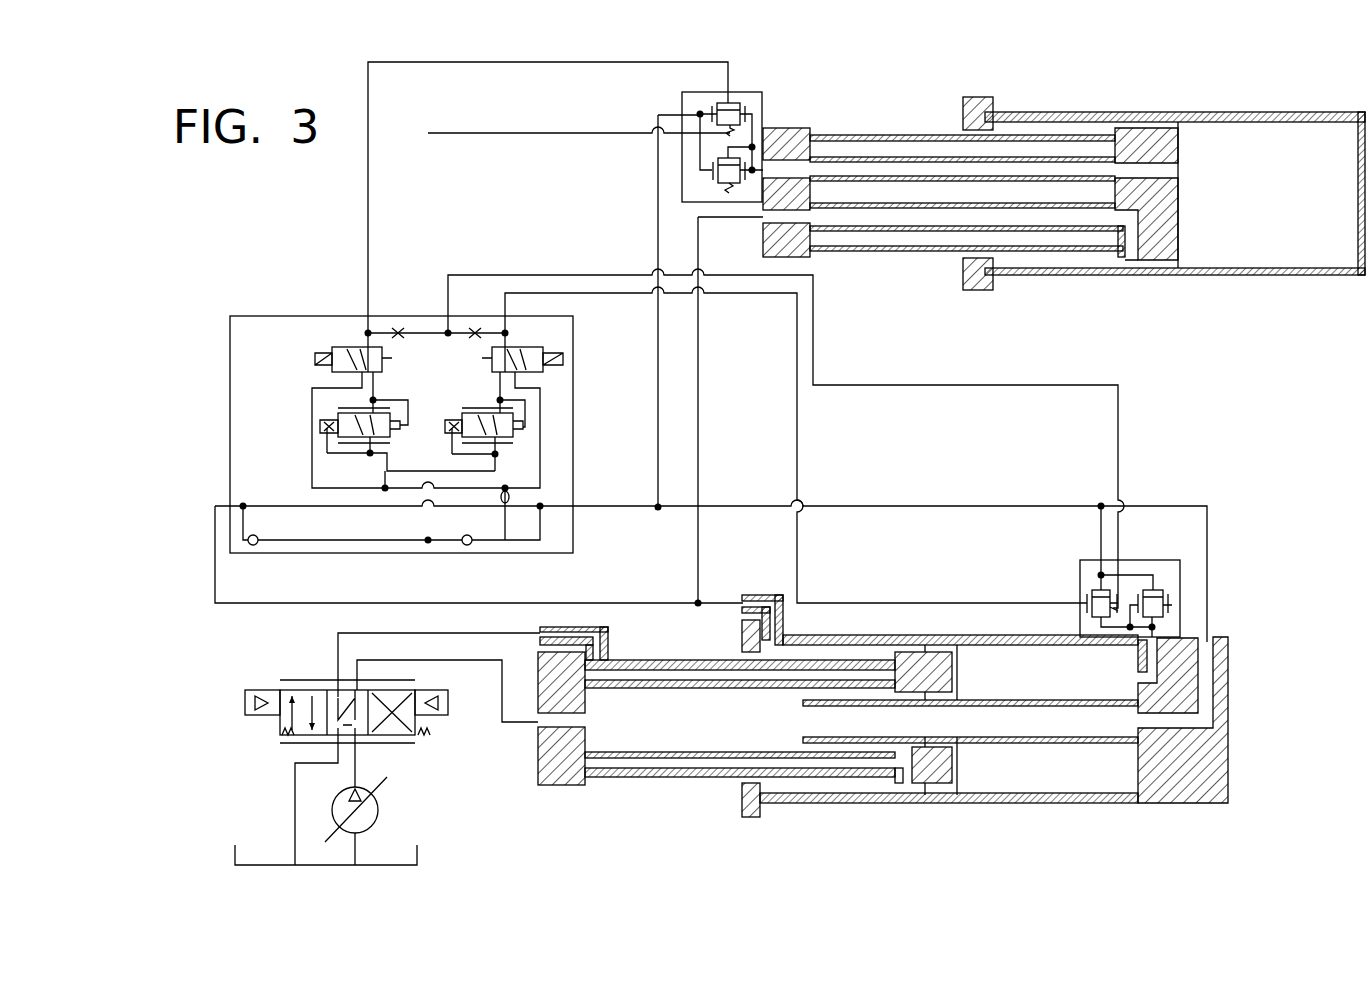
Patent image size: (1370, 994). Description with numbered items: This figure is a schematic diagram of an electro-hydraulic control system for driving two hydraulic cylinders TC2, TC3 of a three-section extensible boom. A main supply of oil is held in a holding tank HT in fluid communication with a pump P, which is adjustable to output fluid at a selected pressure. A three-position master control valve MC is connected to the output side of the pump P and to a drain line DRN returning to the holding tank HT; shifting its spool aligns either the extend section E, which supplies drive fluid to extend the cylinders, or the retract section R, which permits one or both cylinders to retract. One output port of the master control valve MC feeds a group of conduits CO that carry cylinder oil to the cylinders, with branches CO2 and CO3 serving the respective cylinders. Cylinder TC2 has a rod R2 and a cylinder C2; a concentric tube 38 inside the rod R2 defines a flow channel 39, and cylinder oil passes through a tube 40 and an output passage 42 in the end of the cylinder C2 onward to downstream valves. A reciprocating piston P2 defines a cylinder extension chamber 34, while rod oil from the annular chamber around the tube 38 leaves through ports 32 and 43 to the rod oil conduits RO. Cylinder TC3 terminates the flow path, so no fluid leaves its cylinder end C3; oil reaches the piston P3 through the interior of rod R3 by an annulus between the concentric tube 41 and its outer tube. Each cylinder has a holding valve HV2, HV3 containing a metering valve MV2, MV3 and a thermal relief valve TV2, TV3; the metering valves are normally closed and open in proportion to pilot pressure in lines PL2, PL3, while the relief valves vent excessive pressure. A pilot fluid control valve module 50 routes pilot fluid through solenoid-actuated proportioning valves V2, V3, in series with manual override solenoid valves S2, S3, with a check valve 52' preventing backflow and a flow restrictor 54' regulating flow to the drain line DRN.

The port 32 is at (608, 642).
The cylinder extension chamber 34 is at (1295, 207).
The concentric tube 38 is at (905, 150).
The flow channel 39 is at (918, 165).
The tube 40 is at (1005, 735).
The concentric tube 41 is at (870, 252).
The output passage 42 is at (1230, 690).
The port 43 is at (745, 597).
The pilot fluid control valve module 50 is at (230, 436).
The check valve 52' is at (392, 526).
The flow restrictor 54' is at (437, 281).
The pilot fluid supply line PL3 is at (549, 62).
The pilot fluid supply line PL2 is at (845, 603).
The holding valve HV3 is at (658, 121).
The holding valve HV2 is at (1141, 571).
The hydraulic cylinder TC3 is at (975, 399).
The hydraulic cylinder TC2 is at (922, 707).
The metering valve assembly MV3 is at (700, 114).
The metering valve assembly MV2 is at (1087, 603).
The thermal relief valve assembly TV3 is at (712, 170).
The thermal relief valve assembly TV2 is at (1168, 598).
The rod R3 is at (848, 133).
The rod R2 is at (655, 778).
The piston P3 is at (1180, 212).
The piston P2 is at (958, 682).
The cylinder C3 is at (1272, 276).
The cylinder C2 is at (1205, 805).
The cylinder oil conduit CO3 is at (658, 306).
The cylinder oil conduit CO2 is at (1101, 542).
The conduits CO is at (870, 506).
The conduits RO is at (698, 328).
The drain line DRN is at (1118, 446).
The solenoid valve S3 is at (315, 358).
The solenoid valve S2 is at (563, 358).
The pressure reducing proportioning control valve V3 is at (320, 426).
The pressure reducing proportioning control valve V2 is at (523, 428).
The master control valve MC is at (277, 670).
The extend section E is at (270, 736).
The retract section R is at (425, 736).
The pump P is at (380, 810).
The holding tank HT is at (417, 855).